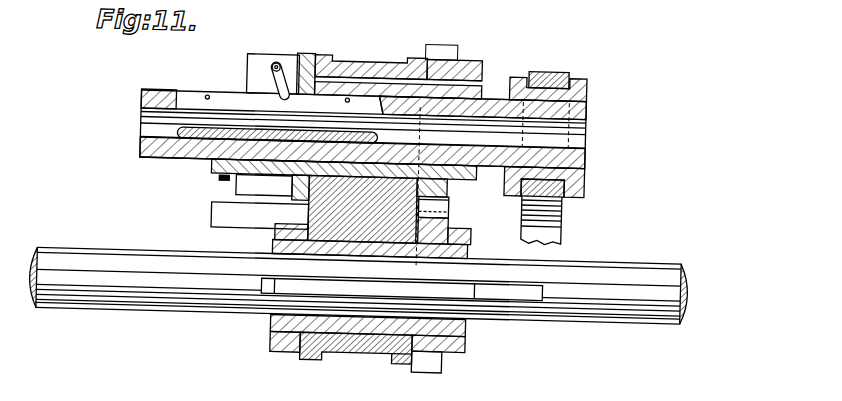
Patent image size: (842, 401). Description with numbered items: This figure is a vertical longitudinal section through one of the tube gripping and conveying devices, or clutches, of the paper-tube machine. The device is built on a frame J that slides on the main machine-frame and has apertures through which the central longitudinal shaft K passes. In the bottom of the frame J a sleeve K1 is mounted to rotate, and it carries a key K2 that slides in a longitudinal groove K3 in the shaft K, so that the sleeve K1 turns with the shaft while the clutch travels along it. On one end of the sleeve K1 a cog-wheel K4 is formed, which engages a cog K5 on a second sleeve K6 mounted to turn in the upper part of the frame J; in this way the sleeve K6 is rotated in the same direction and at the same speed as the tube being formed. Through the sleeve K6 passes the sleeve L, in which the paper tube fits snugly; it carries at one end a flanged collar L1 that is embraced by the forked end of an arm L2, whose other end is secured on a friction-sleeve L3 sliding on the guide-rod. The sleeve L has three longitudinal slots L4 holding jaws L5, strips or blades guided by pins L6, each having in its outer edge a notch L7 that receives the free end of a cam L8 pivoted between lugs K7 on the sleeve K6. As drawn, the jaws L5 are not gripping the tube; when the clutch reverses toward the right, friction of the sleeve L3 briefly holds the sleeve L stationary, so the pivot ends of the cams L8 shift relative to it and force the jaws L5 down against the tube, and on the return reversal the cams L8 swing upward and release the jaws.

The frame J is at (363, 205).
The central longitudinal shaft K is at (358, 285).
The sleeve K1 is at (370, 344).
The key K2 is at (436, 285).
The longitudinal groove K3 is at (194, 280).
The cog-wheel K4 is at (437, 357).
The cog K5 is at (454, 53).
The sleeve K6 is at (482, 74).
The lugs K7 is at (265, 53).
The sleeve L is at (138, 152).
The flanged collar L1 is at (580, 69).
The arm L2 is at (545, 211).
The friction-sleeve L3 is at (406, 360).
The longitudinal slots L4 is at (178, 107).
The jaws L5 is at (188, 89).
The pins L6 is at (210, 96).
The notch L7 is at (288, 95).
The cam L8 is at (270, 67).